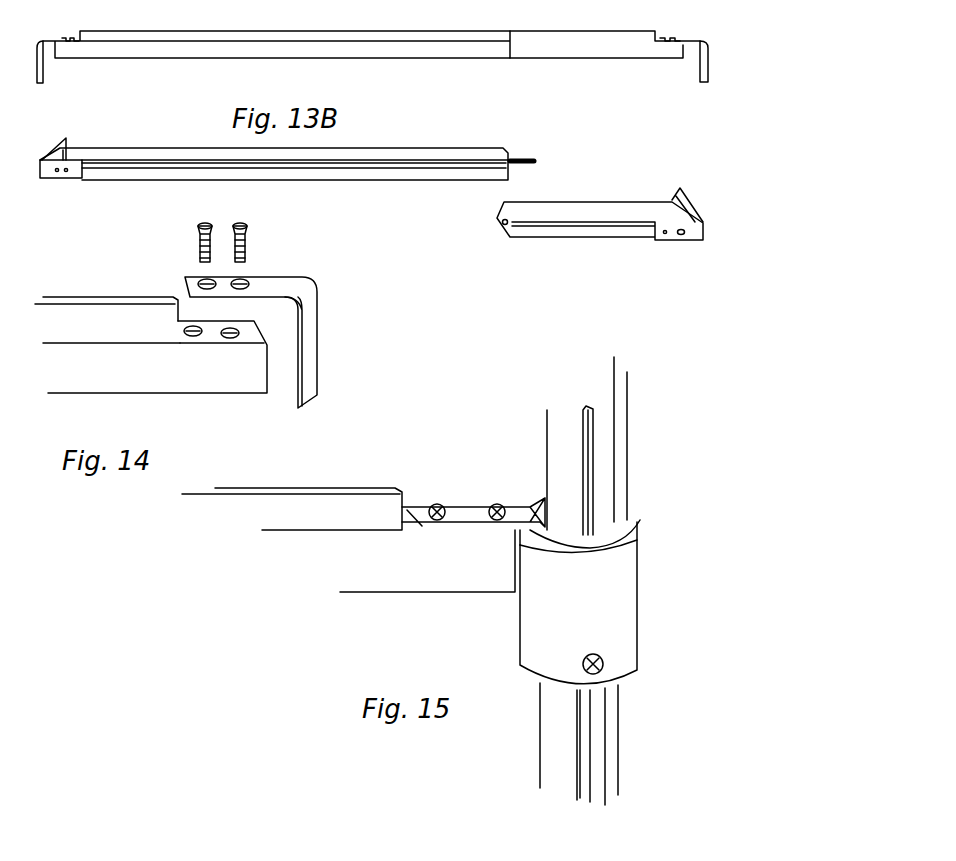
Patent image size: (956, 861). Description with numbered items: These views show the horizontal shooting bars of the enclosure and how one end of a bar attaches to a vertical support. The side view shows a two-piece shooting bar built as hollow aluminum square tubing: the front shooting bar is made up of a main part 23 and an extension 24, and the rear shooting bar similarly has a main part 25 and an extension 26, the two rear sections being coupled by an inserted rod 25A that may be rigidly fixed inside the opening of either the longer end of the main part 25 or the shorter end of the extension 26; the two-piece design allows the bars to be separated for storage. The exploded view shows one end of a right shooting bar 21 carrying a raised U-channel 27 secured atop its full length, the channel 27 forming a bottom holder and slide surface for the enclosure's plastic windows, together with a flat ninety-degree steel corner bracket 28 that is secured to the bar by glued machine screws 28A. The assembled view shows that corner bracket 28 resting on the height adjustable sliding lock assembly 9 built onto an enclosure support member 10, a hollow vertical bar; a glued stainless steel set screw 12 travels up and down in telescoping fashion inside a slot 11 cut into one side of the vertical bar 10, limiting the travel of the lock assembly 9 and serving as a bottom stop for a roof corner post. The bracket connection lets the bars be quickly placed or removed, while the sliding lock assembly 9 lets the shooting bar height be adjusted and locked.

In FIG. 15, the height adjustable sliding lock assembly 9 is at (612, 568).
In FIG. 15, the enclosure support member 10 is at (618, 408).
In FIG. 15, the slot 11 is at (588, 447).
In FIG. 15, the glued set screw 12 is at (605, 660).
In FIG. 14, the right shooting bar 21 is at (182, 365).
In FIG. 15, the right shooting bar 21 is at (443, 570).
In FIG. 13B, the main part 23 is at (137, 50).
In FIG. 13B, the extension 24 is at (606, 50).
In FIG. 13B, the main part 25 is at (165, 152).
In FIG. 13B, the inserted rod 25A is at (519, 158).
In FIG. 13B, the extension 26 is at (610, 213).
In FIG. 14, the raised U-channel 27 is at (90, 323).
In FIG. 15, the raised U-channel 27 is at (315, 512).
In FIG. 14, the corner bracket 28 is at (308, 325).
In FIG. 15, the corner bracket 28 is at (520, 510).
In FIG. 14, the glued machine screw 28A is at (198, 245).
In FIG. 15, the glued machine screw 28A is at (488, 508).